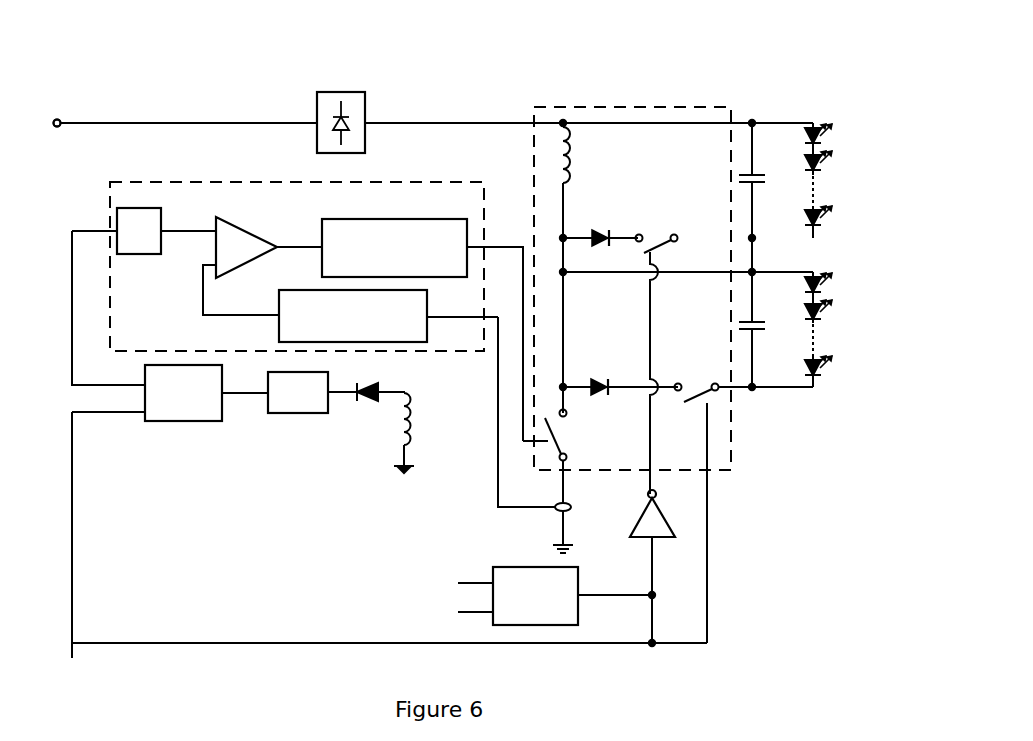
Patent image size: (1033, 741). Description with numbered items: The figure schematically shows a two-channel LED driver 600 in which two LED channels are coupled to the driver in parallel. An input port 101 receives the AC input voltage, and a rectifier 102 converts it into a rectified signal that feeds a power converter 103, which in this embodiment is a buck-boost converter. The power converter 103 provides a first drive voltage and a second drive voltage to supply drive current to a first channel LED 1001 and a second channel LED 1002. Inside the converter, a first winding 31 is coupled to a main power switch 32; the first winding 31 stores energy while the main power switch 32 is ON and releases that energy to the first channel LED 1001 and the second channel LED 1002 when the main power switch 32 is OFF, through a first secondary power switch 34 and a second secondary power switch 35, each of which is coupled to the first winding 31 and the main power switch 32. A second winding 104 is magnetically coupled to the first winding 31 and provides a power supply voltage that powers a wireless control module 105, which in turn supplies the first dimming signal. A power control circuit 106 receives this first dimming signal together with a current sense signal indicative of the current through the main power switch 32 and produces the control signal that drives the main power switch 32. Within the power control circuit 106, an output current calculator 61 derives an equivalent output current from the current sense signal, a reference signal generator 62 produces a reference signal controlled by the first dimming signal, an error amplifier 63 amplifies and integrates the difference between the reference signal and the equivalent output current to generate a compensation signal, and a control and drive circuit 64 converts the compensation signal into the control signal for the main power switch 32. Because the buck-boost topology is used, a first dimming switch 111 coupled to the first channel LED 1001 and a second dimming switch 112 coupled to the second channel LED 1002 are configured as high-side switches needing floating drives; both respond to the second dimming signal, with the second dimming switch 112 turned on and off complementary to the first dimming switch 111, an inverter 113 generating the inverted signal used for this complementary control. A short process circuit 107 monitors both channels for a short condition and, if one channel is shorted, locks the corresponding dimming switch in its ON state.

The two-channel LED driver 600 is at (778, 48).
The input port 101 is at (64, 119).
The rectifier 102 is at (317, 129).
The power converter 103 is at (532, 116).
The power control circuit 106 is at (95, 204).
The reference signal generator 62 is at (139, 231).
The error amplifier 63 is at (256, 228).
The control and drive circuit 64 is at (384, 215).
The output current calculator 61 is at (428, 329).
The first winding 31 is at (556, 160).
The first secondary power switch 34 is at (598, 234).
The second secondary power switch 35 is at (598, 383).
The first dimming switch 111 is at (660, 226).
The second dimming switch 112 is at (700, 377).
The main power switch 32 is at (572, 432).
The wireless control module 105 is at (200, 422).
The second winding 104 is at (388, 420).
The inverter 113 is at (676, 502).
The short process circuit 107 is at (536, 596).
The first channel LED 1001 is at (812, 177).
The second channel LED 1002 is at (812, 329).